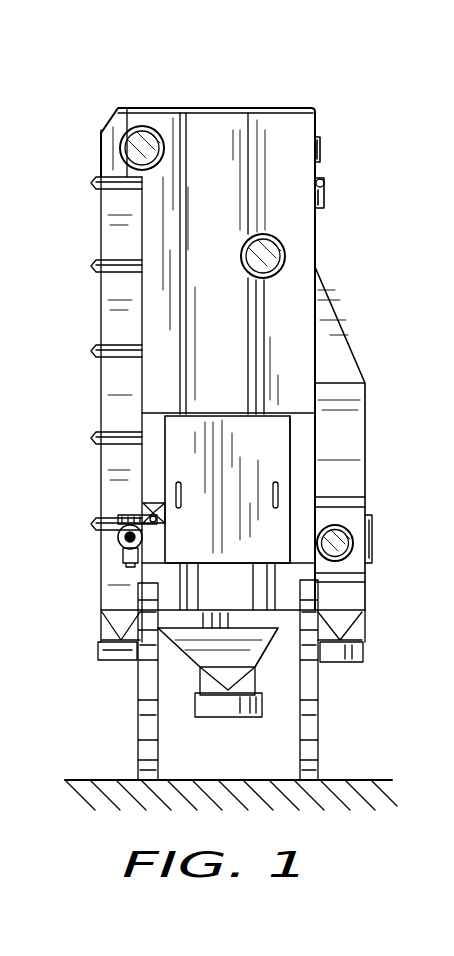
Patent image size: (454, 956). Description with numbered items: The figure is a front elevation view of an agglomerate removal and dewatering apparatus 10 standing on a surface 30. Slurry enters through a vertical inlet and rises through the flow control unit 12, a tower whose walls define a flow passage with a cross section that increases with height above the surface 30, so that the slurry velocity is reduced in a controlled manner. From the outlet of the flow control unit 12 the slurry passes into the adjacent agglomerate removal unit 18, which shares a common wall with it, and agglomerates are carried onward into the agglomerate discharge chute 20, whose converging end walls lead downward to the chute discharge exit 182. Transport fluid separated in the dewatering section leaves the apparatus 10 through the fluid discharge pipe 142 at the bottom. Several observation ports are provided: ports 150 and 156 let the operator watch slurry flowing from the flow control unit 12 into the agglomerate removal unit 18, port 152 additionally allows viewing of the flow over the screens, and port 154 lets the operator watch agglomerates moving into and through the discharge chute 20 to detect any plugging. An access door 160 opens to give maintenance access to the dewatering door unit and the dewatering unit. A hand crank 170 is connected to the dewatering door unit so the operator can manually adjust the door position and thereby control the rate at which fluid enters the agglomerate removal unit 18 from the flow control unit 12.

The apparatus 10 is at (327, 104).
The flow control unit 12 is at (100, 378).
The agglomerate removal unit 18 is at (322, 223).
The agglomerate discharge chute 20 is at (370, 444).
The surface 30 is at (358, 780).
The fluid discharge pipe 142 is at (193, 717).
The observation port 150 is at (126, 153).
The observation port 152 is at (279, 253).
The observation port 154 is at (340, 552).
The observation port 156 is at (320, 160).
The access door 160 is at (272, 460).
The hand crank 170 is at (115, 537).
The chute discharge exit 182 is at (363, 647).